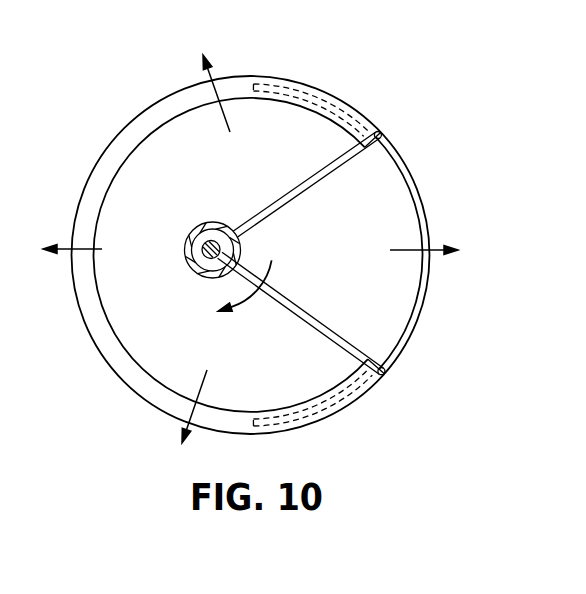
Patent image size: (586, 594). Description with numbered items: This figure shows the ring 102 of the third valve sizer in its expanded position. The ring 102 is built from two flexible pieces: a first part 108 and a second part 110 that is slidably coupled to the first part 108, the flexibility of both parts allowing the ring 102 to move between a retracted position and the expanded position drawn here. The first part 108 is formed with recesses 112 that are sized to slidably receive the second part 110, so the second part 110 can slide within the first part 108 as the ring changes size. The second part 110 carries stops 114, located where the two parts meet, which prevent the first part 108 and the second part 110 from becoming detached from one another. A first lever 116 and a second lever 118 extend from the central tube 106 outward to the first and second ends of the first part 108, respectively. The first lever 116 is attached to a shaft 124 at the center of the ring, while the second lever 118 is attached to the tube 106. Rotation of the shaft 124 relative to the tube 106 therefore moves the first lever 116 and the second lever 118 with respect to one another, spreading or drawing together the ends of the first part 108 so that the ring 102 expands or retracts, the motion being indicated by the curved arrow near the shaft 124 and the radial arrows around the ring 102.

The ring 102 is at (103, 345).
The tube 106 is at (190, 235).
The first part 108 is at (93, 187).
The second part 110 is at (413, 179).
The recesses 112 is at (300, 83).
The stops 114 is at (381, 130).
The first lever 116 is at (305, 322).
The second lever 118 is at (297, 190).
The shaft 124 is at (205, 258).